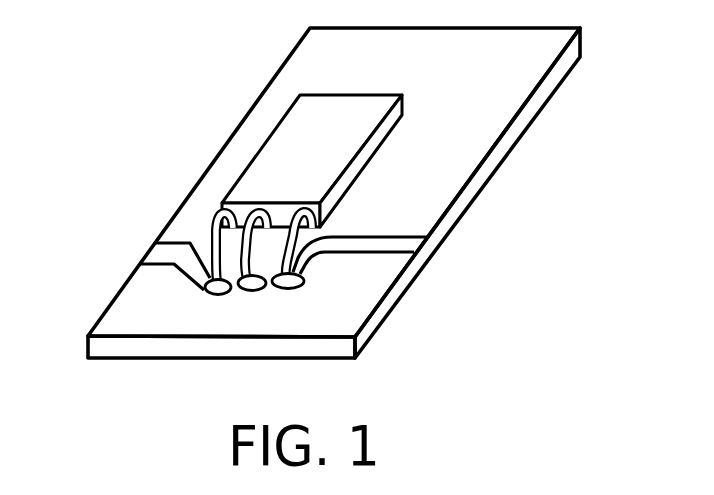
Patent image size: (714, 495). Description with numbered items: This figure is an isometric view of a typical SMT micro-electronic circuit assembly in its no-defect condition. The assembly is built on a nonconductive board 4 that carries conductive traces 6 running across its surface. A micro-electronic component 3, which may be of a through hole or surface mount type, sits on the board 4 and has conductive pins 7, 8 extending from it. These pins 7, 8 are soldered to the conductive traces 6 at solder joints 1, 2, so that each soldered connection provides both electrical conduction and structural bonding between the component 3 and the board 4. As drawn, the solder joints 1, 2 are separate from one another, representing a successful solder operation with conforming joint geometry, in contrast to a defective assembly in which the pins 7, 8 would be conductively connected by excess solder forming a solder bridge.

The solder joint 1 is at (205, 288).
The solder joint 2 is at (268, 293).
The micro-electronic component 3 is at (267, 137).
The nonconductive board 4 is at (495, 160).
The conductive traces 6 is at (380, 235).
The conductive pin 7 is at (213, 240).
The conductive pin 8 is at (218, 214).